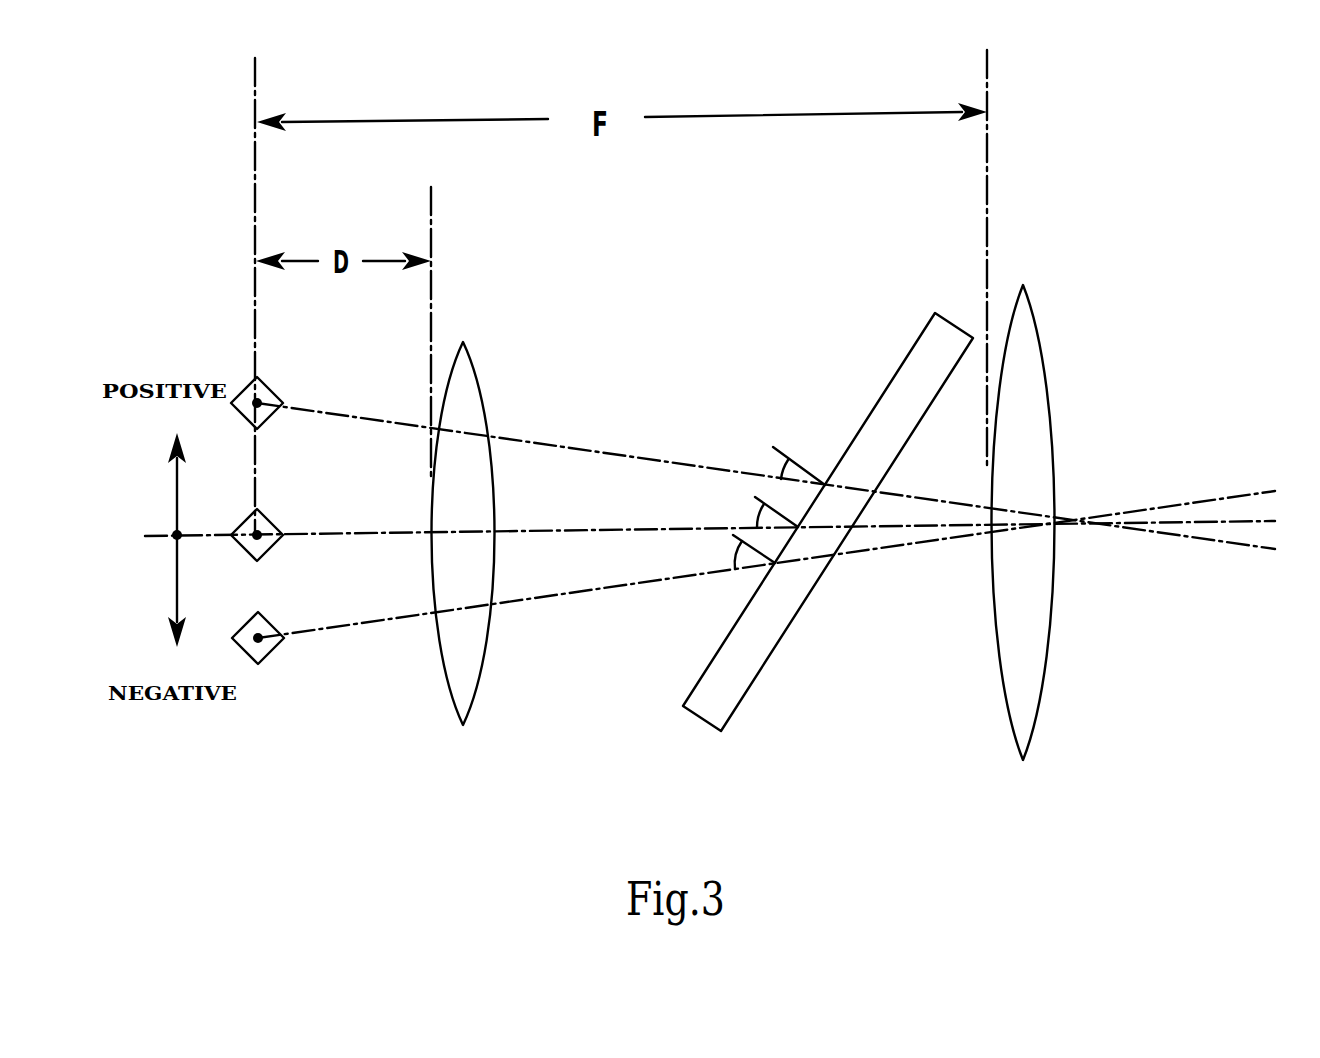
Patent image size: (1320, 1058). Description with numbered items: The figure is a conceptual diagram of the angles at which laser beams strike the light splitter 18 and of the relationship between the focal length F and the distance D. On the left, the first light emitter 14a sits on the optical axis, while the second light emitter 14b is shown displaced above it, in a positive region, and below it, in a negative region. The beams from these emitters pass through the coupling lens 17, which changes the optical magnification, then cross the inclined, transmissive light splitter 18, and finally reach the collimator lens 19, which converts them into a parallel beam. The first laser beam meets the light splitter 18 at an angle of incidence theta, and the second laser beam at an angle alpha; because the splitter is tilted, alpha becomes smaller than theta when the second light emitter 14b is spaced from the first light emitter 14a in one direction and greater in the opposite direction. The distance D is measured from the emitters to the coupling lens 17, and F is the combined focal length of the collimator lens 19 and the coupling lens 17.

The first light emitter 14a is at (262, 530).
The second light emitter 14b is at (262, 397).
The coupling lens 17 is at (472, 384).
The light splitter 18 is at (925, 354).
The collimator lens 19 is at (1032, 348).